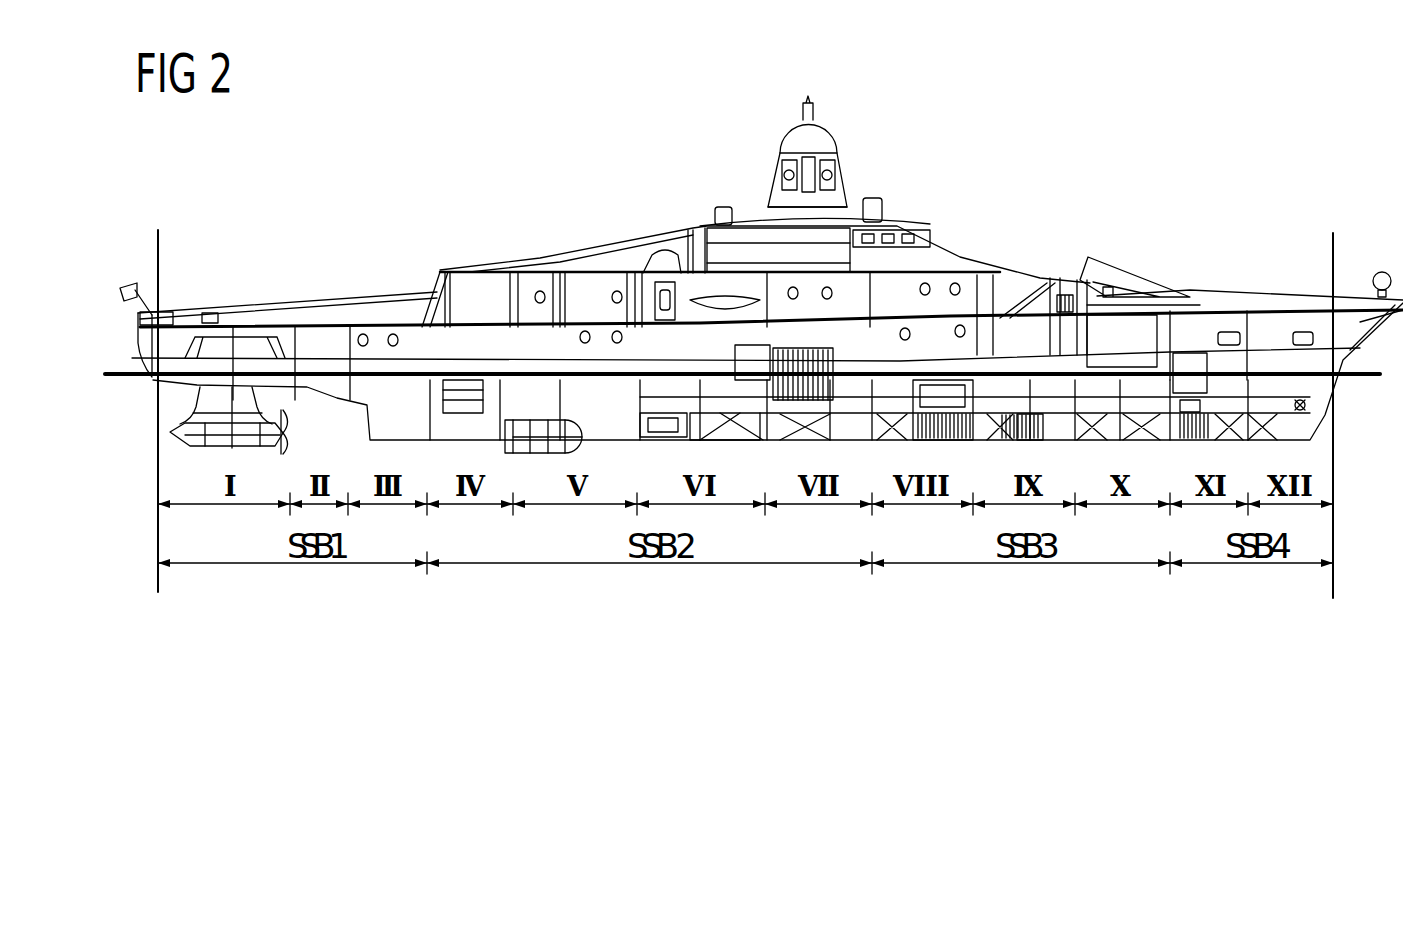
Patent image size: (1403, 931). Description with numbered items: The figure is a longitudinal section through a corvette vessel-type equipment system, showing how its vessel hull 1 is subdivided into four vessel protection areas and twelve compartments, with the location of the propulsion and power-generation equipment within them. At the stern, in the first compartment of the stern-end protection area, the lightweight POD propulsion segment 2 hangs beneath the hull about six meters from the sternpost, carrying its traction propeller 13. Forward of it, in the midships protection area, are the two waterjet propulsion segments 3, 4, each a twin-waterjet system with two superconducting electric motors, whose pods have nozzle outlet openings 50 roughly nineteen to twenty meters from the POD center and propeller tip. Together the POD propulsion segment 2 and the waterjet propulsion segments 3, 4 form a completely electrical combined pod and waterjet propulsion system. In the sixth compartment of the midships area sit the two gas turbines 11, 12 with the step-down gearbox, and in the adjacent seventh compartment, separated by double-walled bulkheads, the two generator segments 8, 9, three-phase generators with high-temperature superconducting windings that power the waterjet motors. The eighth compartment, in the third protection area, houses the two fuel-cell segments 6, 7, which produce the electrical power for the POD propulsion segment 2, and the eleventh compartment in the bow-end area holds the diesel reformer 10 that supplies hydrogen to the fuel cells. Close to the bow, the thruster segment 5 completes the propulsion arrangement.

The vessel hull 1 is at (1010, 247).
The POD propulsion segment 2 is at (210, 448).
The traction propeller 13 is at (282, 454).
The waterjet propulsion segment 3 is at (547, 527).
The waterjet propulsion segment 4 is at (555, 440).
The nozzle outlet openings 50 is at (515, 440).
The gas turbine 11 is at (705, 524).
The gas turbine 12 is at (710, 432).
The generator segment 8 is at (788, 490).
The generator segment 9 is at (790, 402).
The fuel-cell segment 6 is at (943, 507).
The fuel-cell segment 7 is at (952, 420).
The diesel reformer 10 is at (1192, 373).
The thruster segment 5 is at (1305, 410).